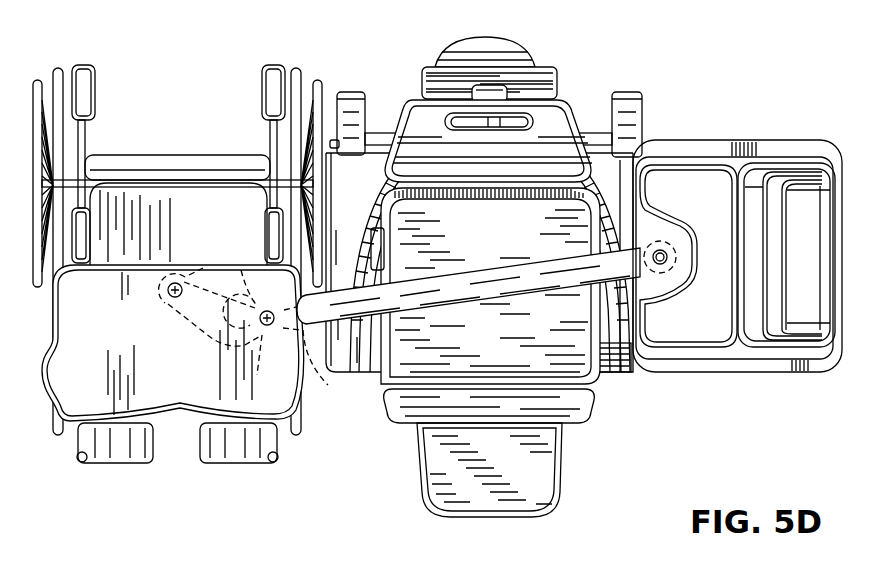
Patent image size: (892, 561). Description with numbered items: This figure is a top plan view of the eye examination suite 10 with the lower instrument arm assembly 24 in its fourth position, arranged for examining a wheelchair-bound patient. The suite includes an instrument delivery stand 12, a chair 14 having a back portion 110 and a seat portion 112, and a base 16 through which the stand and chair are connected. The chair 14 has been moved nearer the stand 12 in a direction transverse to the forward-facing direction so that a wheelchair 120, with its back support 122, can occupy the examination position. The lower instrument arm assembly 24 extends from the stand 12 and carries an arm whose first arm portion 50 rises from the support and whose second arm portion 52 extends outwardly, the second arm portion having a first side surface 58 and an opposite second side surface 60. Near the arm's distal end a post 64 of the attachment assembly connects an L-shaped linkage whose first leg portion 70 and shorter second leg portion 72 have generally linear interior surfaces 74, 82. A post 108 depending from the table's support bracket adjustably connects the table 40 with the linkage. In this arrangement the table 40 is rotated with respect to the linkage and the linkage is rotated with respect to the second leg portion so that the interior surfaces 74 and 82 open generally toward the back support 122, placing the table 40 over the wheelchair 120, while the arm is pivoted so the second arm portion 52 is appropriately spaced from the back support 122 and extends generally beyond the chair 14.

The eye examination suite 10 is at (792, 81).
The instrument delivery stand 12 is at (728, 159).
The chair 14 is at (578, 106).
The base 16 is at (622, 381).
The lower instrument arm assembly 24 is at (314, 402).
The table 40 is at (180, 416).
The first arm portion 50 is at (668, 287).
The second arm portion 52 is at (528, 277).
The first side surface 58 is at (530, 262).
The second side surface 60 is at (448, 303).
The post 64 is at (328, 365).
The first leg portion 70 is at (200, 331).
The second leg portion 72 is at (259, 367).
The interior surface 74 is at (203, 268).
The interior surface 82 is at (241, 270).
The post 108 is at (165, 306).
The back portion 110 is at (435, 130).
The seat portion 112 is at (485, 242).
The wheelchair 120 is at (80, 58).
The back support 122 is at (181, 177).